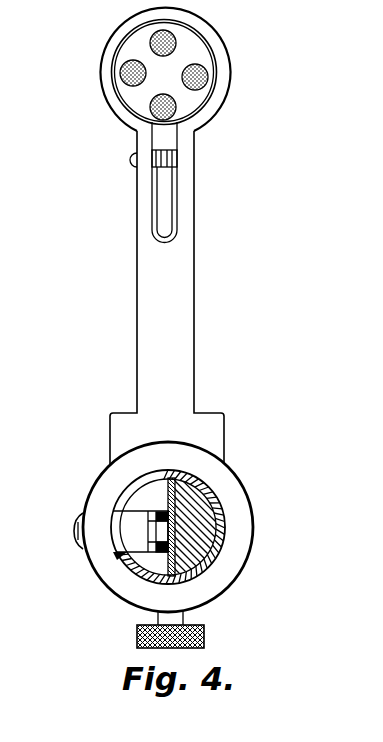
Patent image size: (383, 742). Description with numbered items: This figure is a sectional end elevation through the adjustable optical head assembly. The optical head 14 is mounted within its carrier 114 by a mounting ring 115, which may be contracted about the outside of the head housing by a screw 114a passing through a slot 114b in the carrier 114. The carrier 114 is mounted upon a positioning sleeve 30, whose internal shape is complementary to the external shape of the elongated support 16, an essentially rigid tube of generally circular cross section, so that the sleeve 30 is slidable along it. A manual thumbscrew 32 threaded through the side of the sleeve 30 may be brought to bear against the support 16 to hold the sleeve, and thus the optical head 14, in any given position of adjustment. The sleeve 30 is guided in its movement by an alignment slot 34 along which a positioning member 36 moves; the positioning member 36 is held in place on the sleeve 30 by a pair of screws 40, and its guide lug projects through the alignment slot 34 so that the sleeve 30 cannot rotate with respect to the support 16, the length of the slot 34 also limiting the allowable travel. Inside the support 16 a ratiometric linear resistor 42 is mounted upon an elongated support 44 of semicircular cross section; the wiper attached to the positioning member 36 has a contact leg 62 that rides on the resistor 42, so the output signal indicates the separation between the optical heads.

The mounting ring 115 is at (215, 45).
The optical head 14 is at (212, 90).
The carrier 114 is at (177, 298).
The screw 114a is at (131, 159).
The slot 114b is at (163, 205).
The positioning sleeve 30 is at (232, 490).
The elongated support 16 is at (220, 536).
The elongated support 44 is at (178, 553).
The positioning member 36 is at (124, 526).
The alignment slot 34 is at (120, 556).
The contact leg 62 is at (166, 506).
The screws 40 is at (76, 529).
The ratiometric linear resistor 42 is at (145, 568).
The manual thumbscrew 32 is at (204, 631).